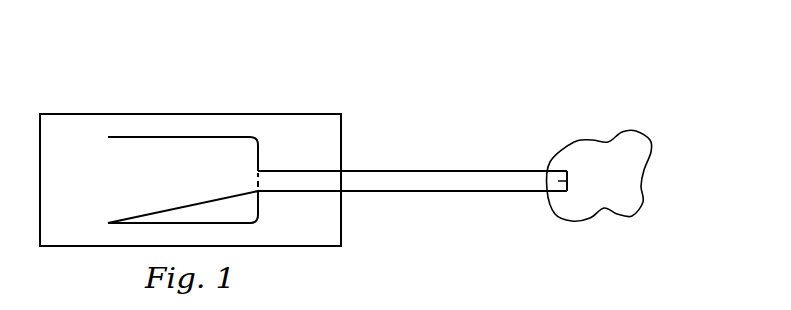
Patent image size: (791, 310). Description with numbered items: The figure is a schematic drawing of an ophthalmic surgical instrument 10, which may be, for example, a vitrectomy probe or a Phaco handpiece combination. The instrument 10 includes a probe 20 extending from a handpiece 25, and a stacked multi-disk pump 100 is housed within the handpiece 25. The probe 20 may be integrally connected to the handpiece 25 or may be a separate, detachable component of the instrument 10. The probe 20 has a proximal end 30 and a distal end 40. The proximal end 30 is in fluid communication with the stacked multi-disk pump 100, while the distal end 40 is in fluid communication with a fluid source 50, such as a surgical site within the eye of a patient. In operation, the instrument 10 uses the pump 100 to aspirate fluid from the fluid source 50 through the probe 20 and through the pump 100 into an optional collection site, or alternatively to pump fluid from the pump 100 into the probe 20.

The ophthalmic surgical instrument 10 is at (357, 67).
The handpiece 25 is at (81, 113).
The stacked multi-disk pump 100 is at (203, 195).
The proximal end 30 is at (290, 178).
The probe 20 is at (470, 178).
The distal end 40 is at (562, 181).
The fluid source 50 is at (634, 202).